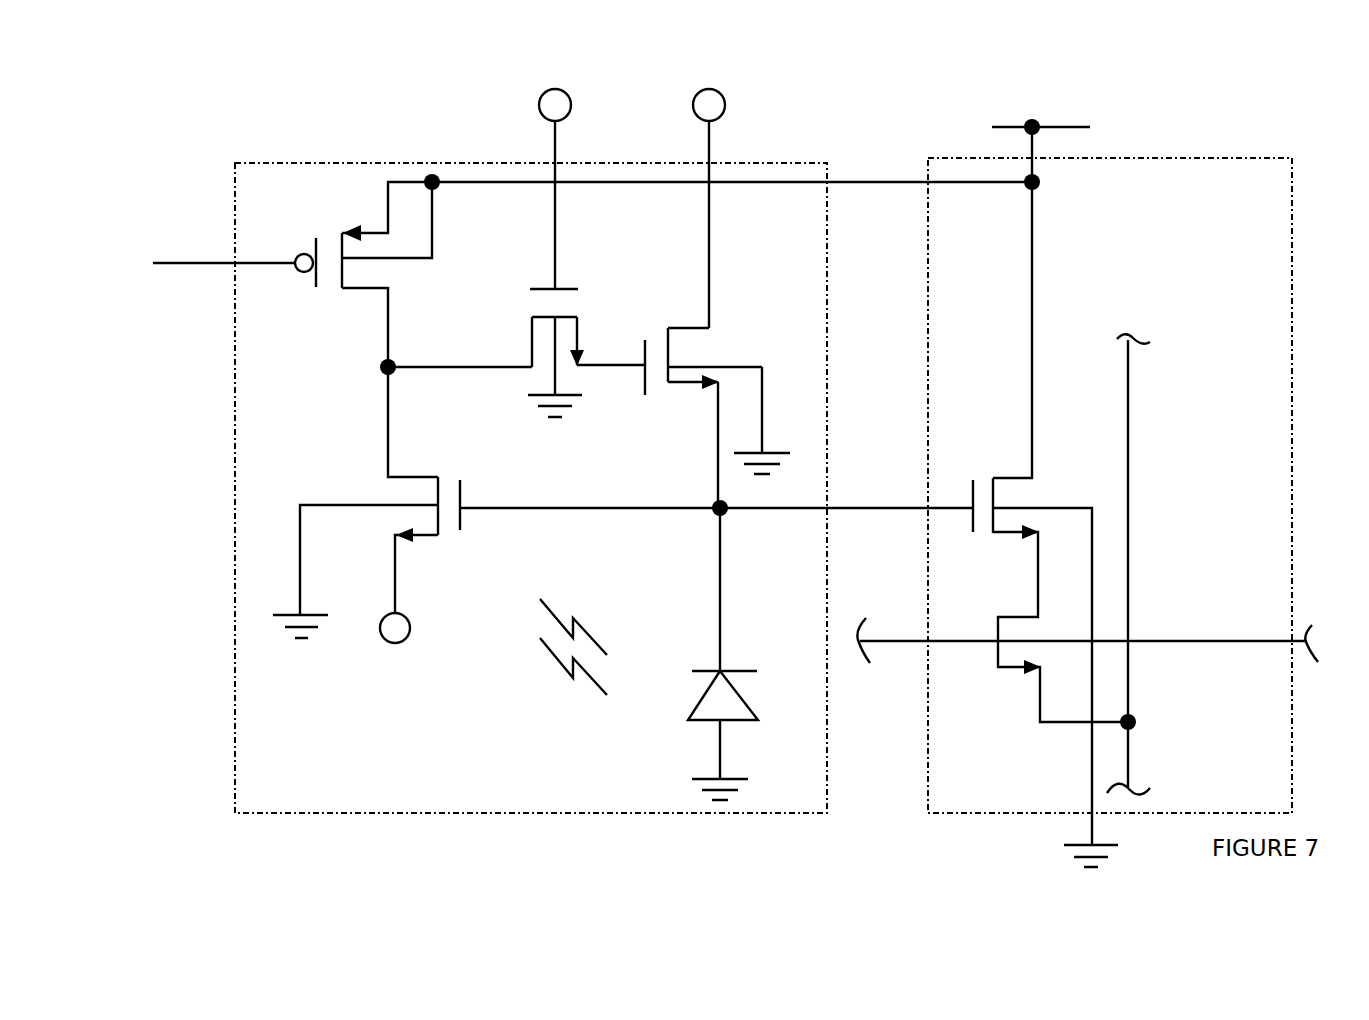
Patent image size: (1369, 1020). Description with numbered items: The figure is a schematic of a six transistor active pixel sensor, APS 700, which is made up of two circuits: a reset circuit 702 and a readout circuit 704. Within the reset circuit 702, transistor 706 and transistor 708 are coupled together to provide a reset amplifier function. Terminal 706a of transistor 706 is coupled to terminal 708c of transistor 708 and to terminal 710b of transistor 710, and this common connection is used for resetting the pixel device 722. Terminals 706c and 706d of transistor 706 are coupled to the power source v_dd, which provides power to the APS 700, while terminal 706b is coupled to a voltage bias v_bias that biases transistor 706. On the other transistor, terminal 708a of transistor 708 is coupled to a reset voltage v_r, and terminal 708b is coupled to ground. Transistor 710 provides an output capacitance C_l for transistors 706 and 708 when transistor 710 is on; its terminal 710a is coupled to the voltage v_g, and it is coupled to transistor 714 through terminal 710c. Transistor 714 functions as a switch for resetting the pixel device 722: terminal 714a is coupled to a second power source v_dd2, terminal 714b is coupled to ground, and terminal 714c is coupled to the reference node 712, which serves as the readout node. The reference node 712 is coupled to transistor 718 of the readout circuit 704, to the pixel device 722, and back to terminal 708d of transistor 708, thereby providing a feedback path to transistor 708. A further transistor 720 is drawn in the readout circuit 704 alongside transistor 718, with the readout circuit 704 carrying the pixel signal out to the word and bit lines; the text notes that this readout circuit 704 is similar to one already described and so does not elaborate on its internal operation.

The six transistor APS 700 is at (892, 93).
The reset circuit 702 is at (233, 192).
The readout circuit 704 is at (1297, 187).
The transistor 706 is at (341, 290).
The terminal of transistor 706 706a is at (422, 330).
The terminal of transistor 706 706b is at (280, 266).
The terminal of transistor 706 706c is at (387, 212).
The terminal of transistor 706 706d is at (433, 247).
The transistor 708 is at (433, 540).
The terminal of transistor 708 708a is at (392, 578).
The terminal of transistor 708 708b is at (300, 543).
The terminal of transistor 708 708c is at (388, 440).
The terminal of transistor 708 708d is at (498, 500).
The transistor 710 is at (578, 318).
The terminal of transistor 710 710a is at (555, 240).
The terminal of transistor 710 710b is at (532, 345).
The terminal of transistor 710 710c is at (608, 367).
The reference node 712 is at (716, 502).
The transistor 714 is at (708, 338).
The terminal of transistor 714 714a is at (709, 240).
The terminal of transistor 714 714b is at (762, 418).
The terminal of transistor 714 714c is at (718, 438).
The transistor 718 is at (1035, 482).
The word line access transistor 720 is at (1000, 667).
The pixel device 722 is at (695, 705).